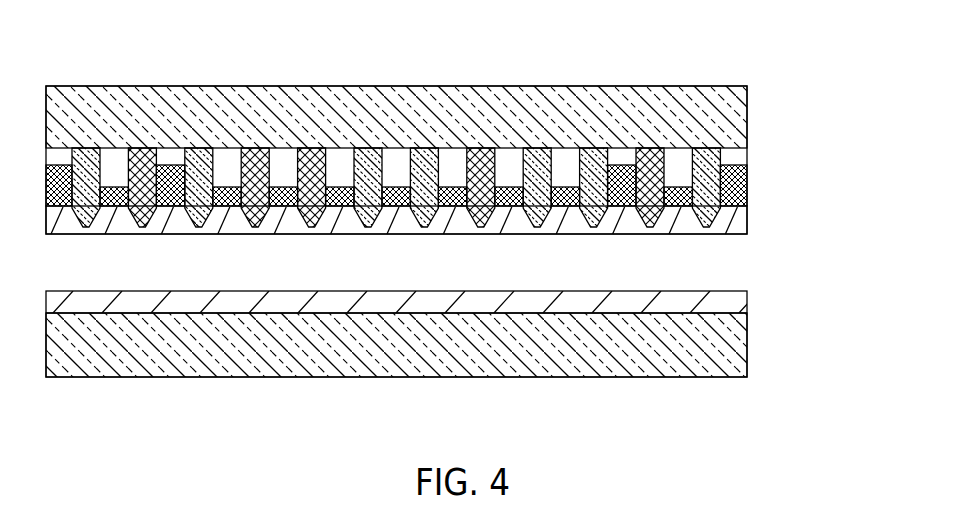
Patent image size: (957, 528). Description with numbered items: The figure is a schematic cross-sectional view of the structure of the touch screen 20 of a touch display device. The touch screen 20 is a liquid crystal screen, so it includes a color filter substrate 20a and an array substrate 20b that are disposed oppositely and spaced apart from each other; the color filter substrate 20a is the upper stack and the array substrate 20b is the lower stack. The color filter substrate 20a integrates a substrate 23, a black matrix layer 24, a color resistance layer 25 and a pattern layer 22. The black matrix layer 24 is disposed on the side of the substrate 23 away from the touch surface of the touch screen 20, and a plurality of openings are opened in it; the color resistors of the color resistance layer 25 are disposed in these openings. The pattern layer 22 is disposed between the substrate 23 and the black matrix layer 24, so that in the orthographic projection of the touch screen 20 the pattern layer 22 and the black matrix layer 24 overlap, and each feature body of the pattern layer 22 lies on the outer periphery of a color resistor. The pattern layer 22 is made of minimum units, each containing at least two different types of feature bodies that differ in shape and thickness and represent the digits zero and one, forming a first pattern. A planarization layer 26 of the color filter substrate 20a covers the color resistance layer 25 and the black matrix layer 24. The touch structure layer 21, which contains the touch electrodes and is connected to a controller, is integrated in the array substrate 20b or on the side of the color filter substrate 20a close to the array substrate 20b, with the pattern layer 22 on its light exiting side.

The touch screen 20 is at (462, 218).
The color filter substrate 20a is at (462, 134).
The array substrate 20b is at (426, 356).
The touch structure layer 21 is at (740, 303).
The pattern layer 22 is at (465, 175).
The substrate 23 is at (747, 111).
The black matrix layer 24 is at (747, 197).
The color resistance layer 25 is at (588, 148).
The planarization layer 26 is at (735, 226).